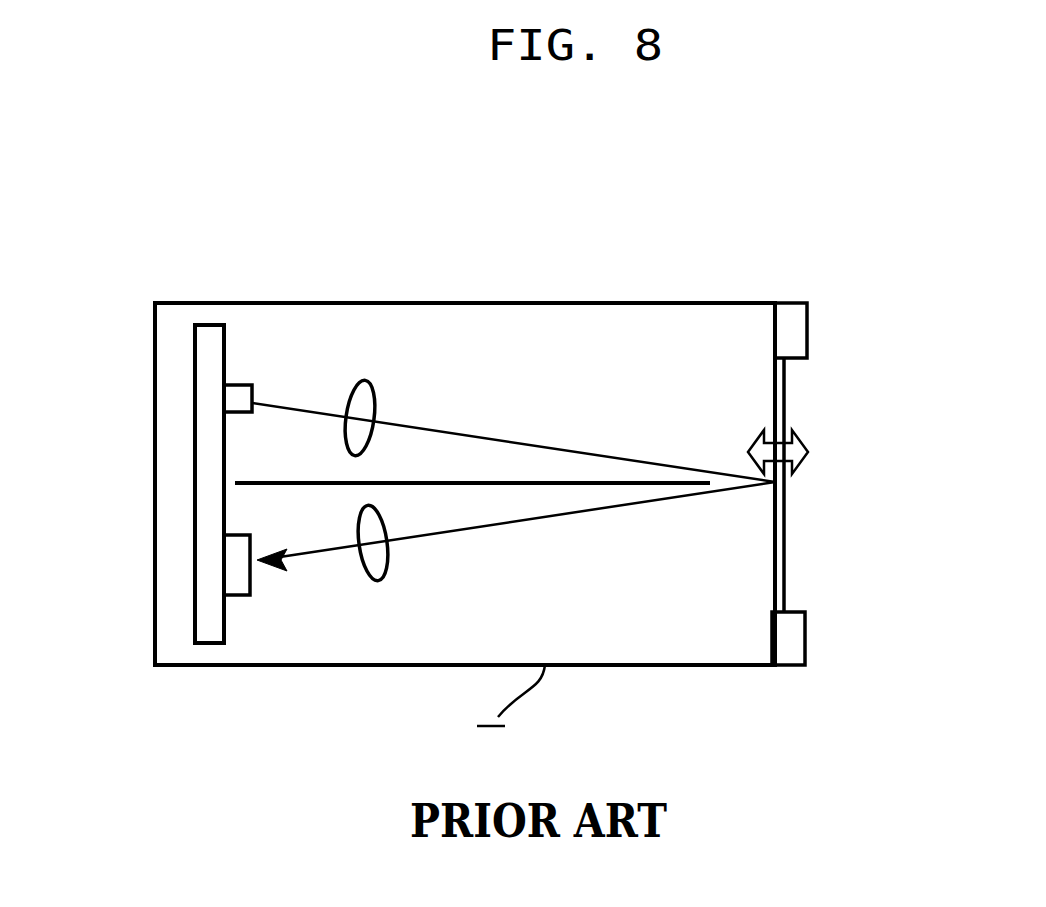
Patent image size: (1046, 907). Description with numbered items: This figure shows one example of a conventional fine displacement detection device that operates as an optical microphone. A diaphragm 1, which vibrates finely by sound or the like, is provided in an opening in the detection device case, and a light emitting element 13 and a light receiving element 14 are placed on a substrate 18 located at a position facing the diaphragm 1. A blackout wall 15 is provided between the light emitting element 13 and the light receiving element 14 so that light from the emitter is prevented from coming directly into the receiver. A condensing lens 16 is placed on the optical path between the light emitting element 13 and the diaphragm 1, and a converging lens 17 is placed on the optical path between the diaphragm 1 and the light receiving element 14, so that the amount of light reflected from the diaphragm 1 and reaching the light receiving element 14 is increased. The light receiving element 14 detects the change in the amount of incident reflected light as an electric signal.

The diaphragm 1 is at (785, 517).
The light emitting element 13 is at (240, 383).
The light receiving element 14 is at (238, 597).
The blackout wall 15 is at (237, 480).
The condensing lens 16 is at (375, 408).
The converging lens 17 is at (390, 557).
The substrate 18 is at (207, 360).